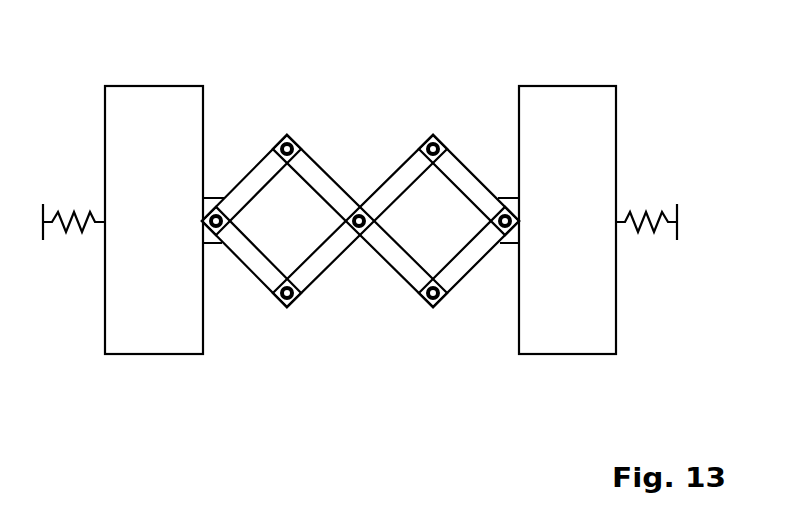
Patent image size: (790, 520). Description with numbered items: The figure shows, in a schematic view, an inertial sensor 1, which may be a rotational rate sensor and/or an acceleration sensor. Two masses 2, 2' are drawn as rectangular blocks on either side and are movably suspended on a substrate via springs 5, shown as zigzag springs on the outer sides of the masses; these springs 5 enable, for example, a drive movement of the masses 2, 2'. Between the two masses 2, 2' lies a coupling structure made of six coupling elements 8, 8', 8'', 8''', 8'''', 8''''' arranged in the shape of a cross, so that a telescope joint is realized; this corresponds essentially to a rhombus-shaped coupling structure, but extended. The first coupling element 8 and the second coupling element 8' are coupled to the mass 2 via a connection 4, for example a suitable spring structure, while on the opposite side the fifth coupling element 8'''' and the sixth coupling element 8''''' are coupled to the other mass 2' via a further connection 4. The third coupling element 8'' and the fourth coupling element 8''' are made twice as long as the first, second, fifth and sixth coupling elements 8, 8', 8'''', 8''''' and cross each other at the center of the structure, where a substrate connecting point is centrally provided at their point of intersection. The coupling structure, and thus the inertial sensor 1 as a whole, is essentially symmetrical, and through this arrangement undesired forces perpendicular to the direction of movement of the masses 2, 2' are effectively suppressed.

The inertial sensor 1 is at (360, 177).
The mass 2 is at (154, 195).
The mass 2' is at (567, 196).
The connection 4 is at (214, 197).
The spring 5 is at (68, 218).
The first coupling element 8 is at (251, 169).
The second coupling element 8' is at (251, 276).
The third coupling element 8'' is at (360, 240).
The fourth coupling element 8''' is at (360, 205).
The fifth coupling element 8'''' is at (469, 276).
The sixth coupling element 8''''' is at (469, 169).